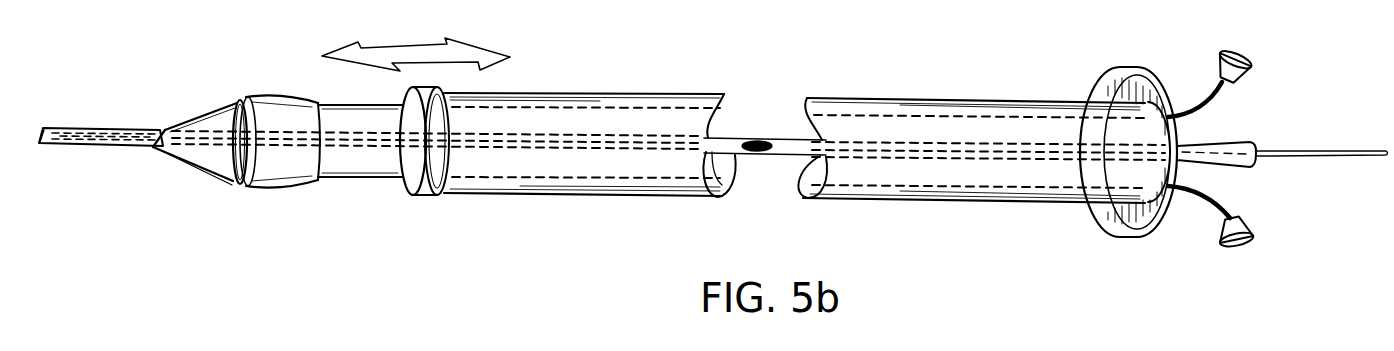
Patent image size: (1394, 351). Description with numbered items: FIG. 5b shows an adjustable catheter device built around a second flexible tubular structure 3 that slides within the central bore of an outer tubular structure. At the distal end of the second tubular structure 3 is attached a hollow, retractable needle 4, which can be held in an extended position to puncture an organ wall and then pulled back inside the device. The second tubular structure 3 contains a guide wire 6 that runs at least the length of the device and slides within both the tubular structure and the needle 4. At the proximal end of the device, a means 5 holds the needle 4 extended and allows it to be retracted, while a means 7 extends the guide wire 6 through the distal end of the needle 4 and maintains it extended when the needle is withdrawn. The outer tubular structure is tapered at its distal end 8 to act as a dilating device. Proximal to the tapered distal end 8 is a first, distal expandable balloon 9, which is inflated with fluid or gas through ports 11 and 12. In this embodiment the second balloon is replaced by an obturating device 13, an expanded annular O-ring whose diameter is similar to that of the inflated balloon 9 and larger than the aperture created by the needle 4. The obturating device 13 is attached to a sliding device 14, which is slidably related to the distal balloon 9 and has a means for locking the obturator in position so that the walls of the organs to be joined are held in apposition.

The second flexible tubular structure 3 is at (550, 135).
The retractable needle 4 is at (90, 128).
The means for holding the needle 5 is at (1247, 141).
The guide wire 6 is at (97, 145).
The means for extending the guide wire 7 is at (1305, 150).
The tapered distal end 8 is at (190, 117).
The first expandable balloon 9 is at (282, 187).
The port 11 is at (1217, 60).
The port 12 is at (1248, 228).
The obturating device 13 is at (425, 196).
The sliding device 14 is at (917, 100).